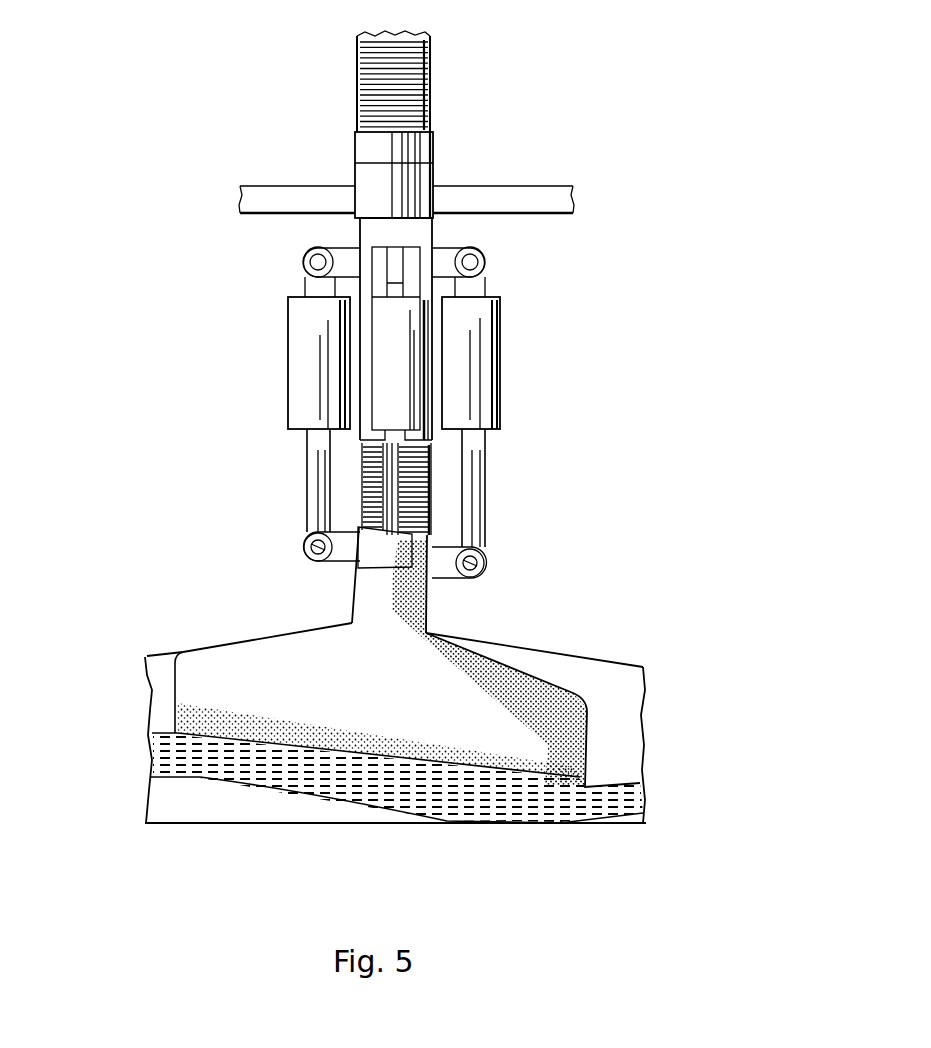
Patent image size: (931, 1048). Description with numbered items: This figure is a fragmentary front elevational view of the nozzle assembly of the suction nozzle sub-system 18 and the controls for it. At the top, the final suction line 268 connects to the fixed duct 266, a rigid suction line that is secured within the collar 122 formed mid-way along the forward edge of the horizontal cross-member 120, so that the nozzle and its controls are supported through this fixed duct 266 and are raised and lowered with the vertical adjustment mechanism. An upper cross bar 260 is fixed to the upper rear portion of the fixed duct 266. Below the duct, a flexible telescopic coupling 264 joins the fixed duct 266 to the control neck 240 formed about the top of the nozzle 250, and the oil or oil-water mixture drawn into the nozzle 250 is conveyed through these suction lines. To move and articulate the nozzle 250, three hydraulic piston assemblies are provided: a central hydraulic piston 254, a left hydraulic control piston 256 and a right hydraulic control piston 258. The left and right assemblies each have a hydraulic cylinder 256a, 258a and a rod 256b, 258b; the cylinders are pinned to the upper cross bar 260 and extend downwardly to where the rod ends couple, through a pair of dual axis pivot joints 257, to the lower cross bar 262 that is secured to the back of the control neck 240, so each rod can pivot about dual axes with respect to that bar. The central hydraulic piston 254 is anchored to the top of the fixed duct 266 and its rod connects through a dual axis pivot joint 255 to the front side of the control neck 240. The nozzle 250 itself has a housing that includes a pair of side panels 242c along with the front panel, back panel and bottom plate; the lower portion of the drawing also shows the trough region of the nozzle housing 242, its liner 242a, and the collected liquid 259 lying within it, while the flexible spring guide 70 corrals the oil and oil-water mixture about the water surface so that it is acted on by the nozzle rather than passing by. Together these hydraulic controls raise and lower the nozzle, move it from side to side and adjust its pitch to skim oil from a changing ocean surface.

The suction nozzle sub-system 18 is at (648, 323).
The flexible spring guide 70 is at (552, 662).
The horizontal cross-member 120 is at (477, 195).
The collar 122 is at (370, 173).
The control neck 240 is at (380, 603).
The trough 242 is at (652, 740).
The trough liner 242a is at (273, 677).
The side panels 242c is at (180, 697).
The nozzle 250 is at (738, 604).
The central hydraulic piston 254 is at (388, 328).
The dual axis pivot joint 255 is at (363, 563).
The left hydraulic control piston 256 is at (258, 350).
The hydraulic cylinder 256a is at (307, 403).
The rod 256b is at (317, 453).
The dual axis pivot joints 257 is at (303, 537).
The right hydraulic control piston 258 is at (512, 352).
The hydraulic cylinder 258a is at (497, 405).
The rod 258b is at (483, 450).
The liquid 259 is at (449, 793).
The upper cross bar 260 is at (437, 253).
The lower cross bar 262 is at (443, 560).
The flexible telescopic coupling 264 is at (428, 500).
The fixed duct 266 is at (382, 233).
The final suction line 268 is at (425, 55).